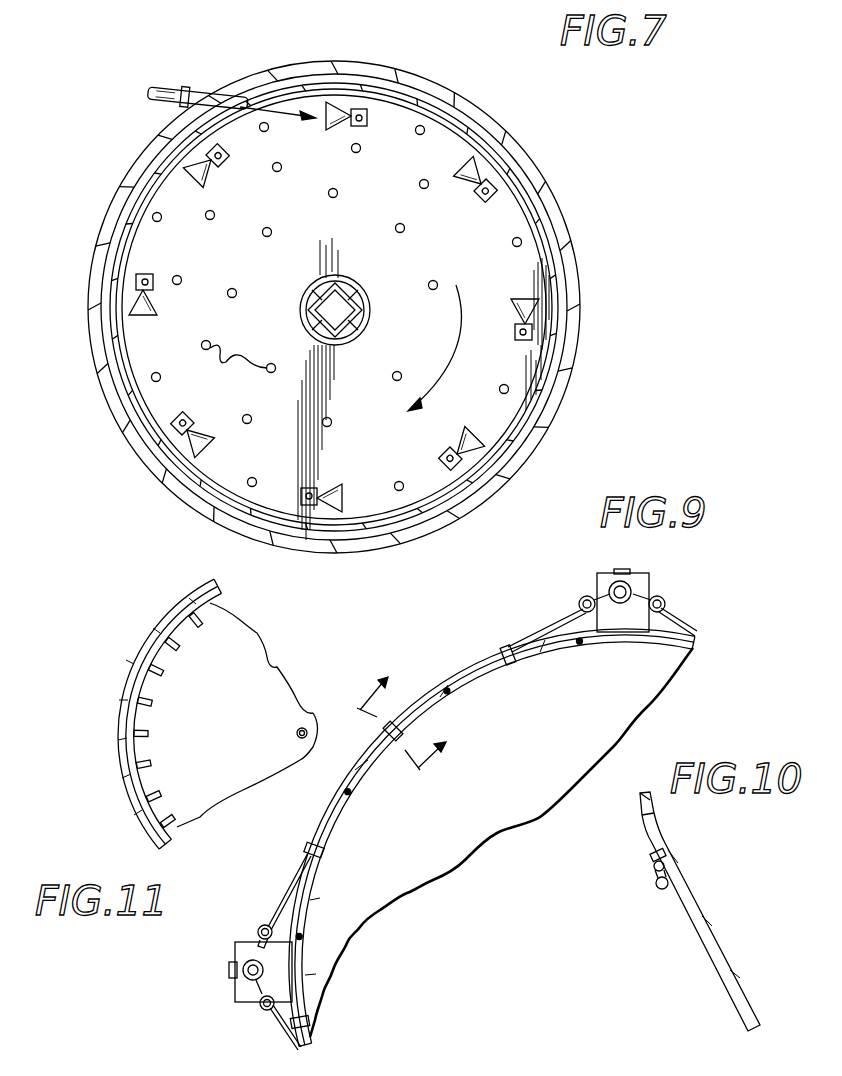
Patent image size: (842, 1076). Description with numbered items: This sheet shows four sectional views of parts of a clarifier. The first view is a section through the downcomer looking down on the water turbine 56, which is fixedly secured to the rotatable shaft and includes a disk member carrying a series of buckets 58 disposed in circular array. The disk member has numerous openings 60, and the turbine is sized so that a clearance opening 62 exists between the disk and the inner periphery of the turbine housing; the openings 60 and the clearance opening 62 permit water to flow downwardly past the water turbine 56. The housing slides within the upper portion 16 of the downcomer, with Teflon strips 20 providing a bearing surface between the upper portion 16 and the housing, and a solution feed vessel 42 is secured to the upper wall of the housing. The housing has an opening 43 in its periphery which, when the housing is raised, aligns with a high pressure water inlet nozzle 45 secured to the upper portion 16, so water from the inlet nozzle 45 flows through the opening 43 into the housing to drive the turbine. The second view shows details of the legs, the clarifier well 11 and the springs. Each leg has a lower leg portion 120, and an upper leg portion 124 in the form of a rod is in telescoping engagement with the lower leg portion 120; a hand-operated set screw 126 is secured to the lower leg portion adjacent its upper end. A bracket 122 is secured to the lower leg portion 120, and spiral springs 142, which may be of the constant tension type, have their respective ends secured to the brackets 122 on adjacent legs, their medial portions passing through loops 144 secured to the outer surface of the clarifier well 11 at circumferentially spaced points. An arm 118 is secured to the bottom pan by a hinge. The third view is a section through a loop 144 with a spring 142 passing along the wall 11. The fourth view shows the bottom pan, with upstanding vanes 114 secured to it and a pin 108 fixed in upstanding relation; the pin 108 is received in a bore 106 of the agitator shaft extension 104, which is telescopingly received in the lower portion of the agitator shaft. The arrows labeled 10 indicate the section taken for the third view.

In FIG. 7, the upper portion 16 is at (455, 100).
In FIG. 7, the Teflon strips 20 is at (500, 142).
In FIG. 7, the solution feed vessel 42 is at (522, 187).
In FIG. 7, the clearance opening 62 is at (540, 222).
In FIG. 7, the water turbine 56 is at (360, 226).
In FIG. 7, the buckets 58 is at (162, 305).
In FIG. 7, the openings 60 is at (239, 364).
In FIG. 7, the high pressure water inlet nozzle 45 is at (180, 85).
In FIG. 7, the opening 43 is at (222, 98).
In FIG. 9, the direction of view arrows 10 is at (415, 715).
In FIG. 9, the loops 144 is at (312, 852).
In FIG. 10, the loops 144 is at (652, 868).
In FIG. 9, the spiral springs 142 is at (293, 890).
In FIG. 10, the spiral springs 142 is at (656, 887).
In FIG. 9, the bracket 122 is at (258, 932).
In FIG. 9, the upper leg portion 124 is at (246, 963).
In FIG. 9, the set screw 126 is at (230, 970).
In FIG. 9, the lower leg portion 120 is at (250, 990).
In FIG. 9, the arm 118 is at (266, 1010).
In FIG. 11, the vanes 114 is at (152, 703).
In FIG. 11, the agitator shaft extension 104 is at (305, 707).
In FIG. 11, the bore 106 is at (298, 750).
In FIG. 11, the pin 108 is at (296, 733).
In FIG. 10, the clarifier well 11 is at (707, 920).